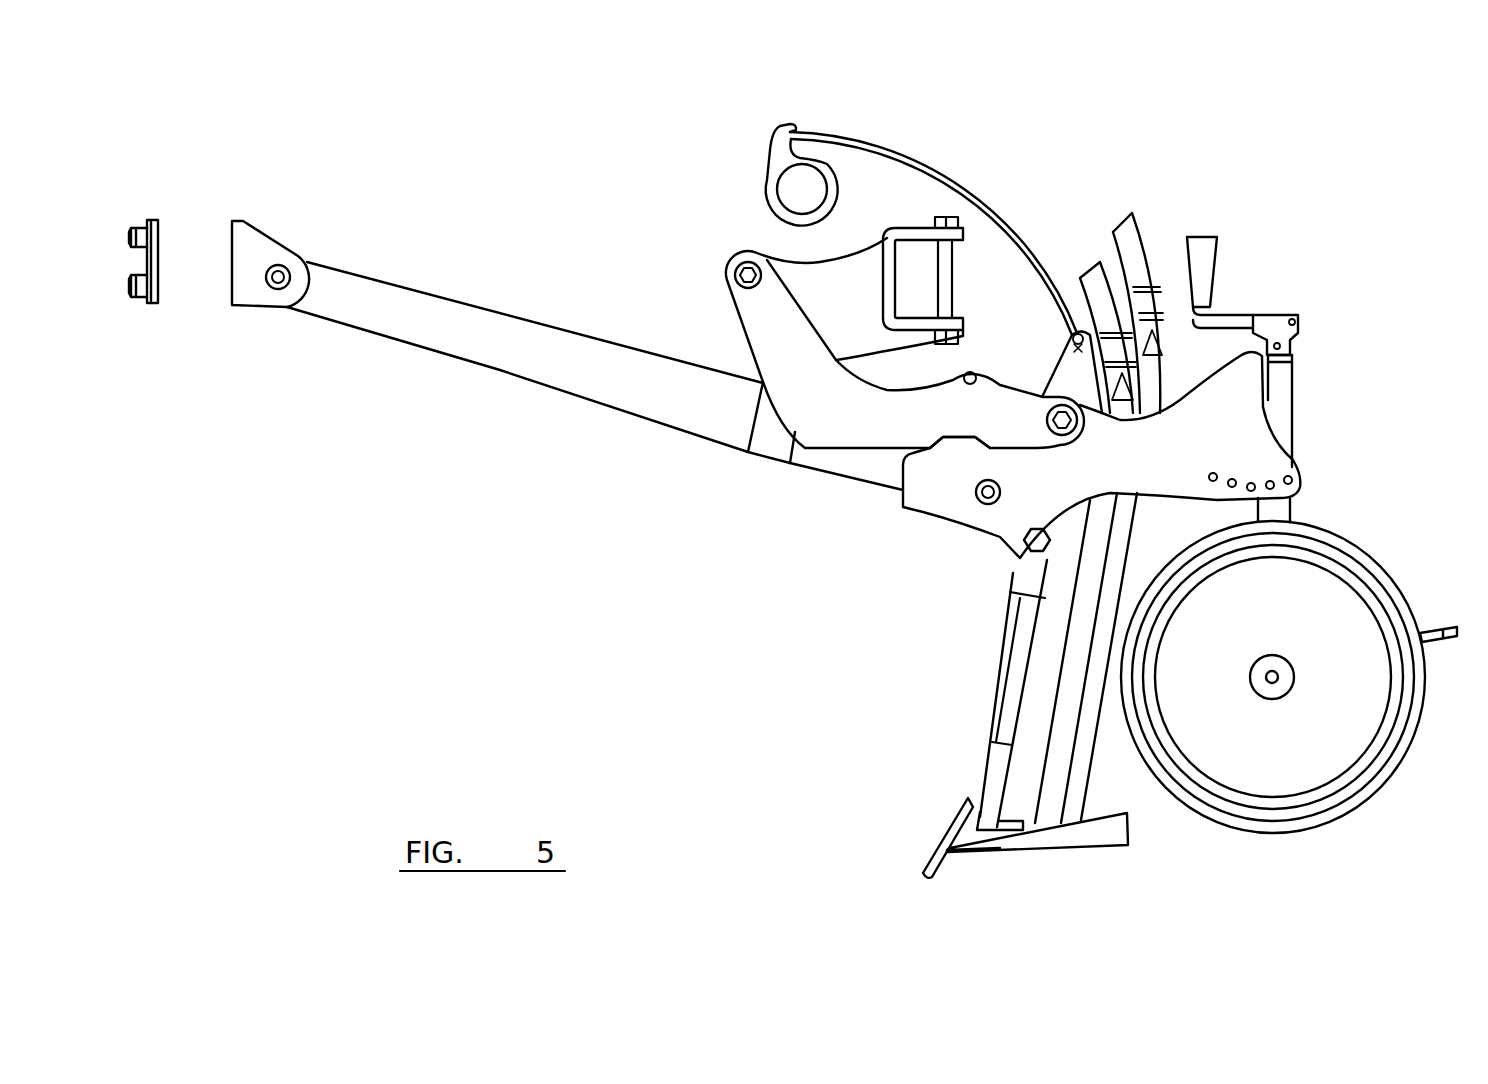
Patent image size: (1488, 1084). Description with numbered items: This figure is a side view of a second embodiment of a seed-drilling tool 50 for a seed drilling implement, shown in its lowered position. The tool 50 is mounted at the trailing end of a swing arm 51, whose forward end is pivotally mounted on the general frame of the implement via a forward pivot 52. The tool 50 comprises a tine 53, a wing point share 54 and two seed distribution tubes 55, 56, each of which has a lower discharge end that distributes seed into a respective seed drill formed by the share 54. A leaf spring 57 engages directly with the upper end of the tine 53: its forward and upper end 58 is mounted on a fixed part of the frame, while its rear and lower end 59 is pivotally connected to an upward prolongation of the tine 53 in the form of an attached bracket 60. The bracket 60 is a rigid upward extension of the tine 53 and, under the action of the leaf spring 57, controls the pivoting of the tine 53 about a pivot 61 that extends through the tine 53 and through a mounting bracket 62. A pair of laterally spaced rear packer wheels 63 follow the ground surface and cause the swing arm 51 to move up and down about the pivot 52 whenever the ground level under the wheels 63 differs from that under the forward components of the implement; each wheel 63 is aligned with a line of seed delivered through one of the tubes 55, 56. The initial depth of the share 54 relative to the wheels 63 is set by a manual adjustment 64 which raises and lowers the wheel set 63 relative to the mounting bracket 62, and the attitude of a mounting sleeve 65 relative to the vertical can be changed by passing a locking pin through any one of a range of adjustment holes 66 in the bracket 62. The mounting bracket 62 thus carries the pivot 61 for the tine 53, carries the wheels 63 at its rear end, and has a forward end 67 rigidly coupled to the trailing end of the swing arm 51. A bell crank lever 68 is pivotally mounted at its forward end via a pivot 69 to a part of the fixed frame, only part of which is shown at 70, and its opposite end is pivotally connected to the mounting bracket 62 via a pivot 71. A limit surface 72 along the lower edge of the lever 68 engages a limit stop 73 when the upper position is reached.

The seed-drilling tool 50 is at (883, 565).
The swing arm 51 is at (518, 345).
The forward pivot 52 is at (280, 264).
The tine 53 is at (1010, 693).
The wing point share 54 is at (1010, 843).
The seed distribution tube 55 is at (1067, 803).
The seed distribution tube 56 is at (1047, 813).
The leaf spring 57 is at (942, 178).
The forward and upper end of leaf spring 58 is at (783, 125).
The rear and lower end of leaf spring 59 is at (1072, 342).
The bracket 60 is at (1070, 372).
The pivot 61 is at (1037, 548).
The mounting bracket 62 is at (1153, 469).
The rear packer wheels 63 is at (1380, 792).
The manual adjustment 64 is at (1282, 318).
The mounting sleeve 65 is at (1283, 407).
The adjustment holes 66 is at (1276, 478).
The forward end of mounting bracket 67 is at (958, 450).
The bell crank lever 68 is at (822, 412).
The pivot 69 is at (738, 264).
The fixed frame part 70 is at (912, 226).
The pivot 71 is at (1055, 432).
The limit surface 72 is at (918, 470).
The limit stop 73 is at (981, 499).